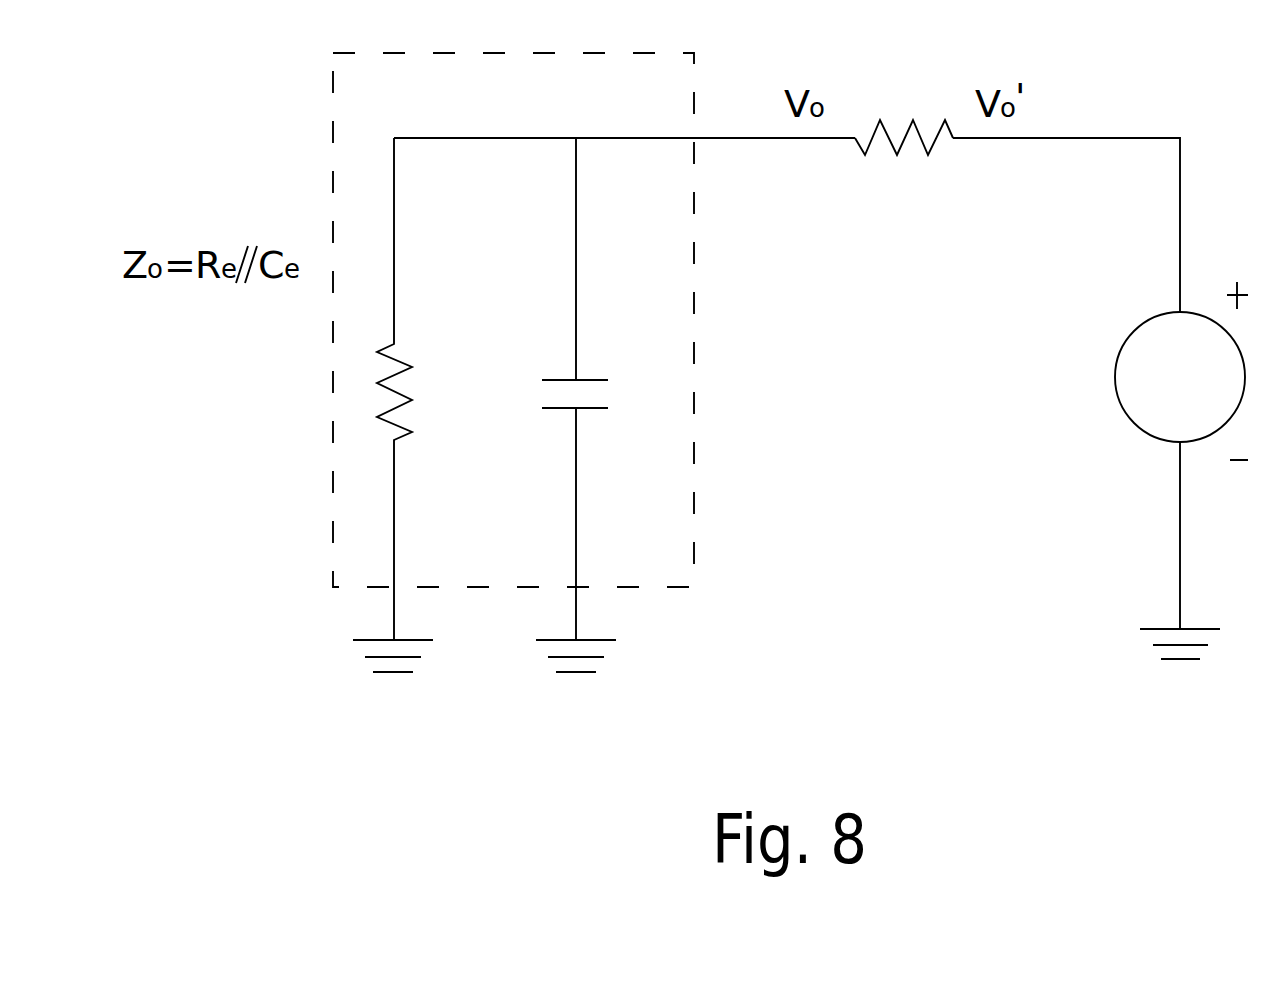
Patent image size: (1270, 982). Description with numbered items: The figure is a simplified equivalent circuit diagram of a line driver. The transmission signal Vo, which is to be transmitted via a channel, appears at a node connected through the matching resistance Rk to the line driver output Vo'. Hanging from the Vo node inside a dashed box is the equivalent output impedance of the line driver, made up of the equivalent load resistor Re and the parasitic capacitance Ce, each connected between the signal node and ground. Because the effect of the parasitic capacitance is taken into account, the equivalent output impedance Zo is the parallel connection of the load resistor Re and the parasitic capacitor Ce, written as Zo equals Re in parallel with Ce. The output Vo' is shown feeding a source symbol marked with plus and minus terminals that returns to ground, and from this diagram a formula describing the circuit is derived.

The equivalent load resistor Re is at (409, 405).
The parasitic capacitance Ce is at (600, 405).
The matching resistance Rk is at (904, 180).